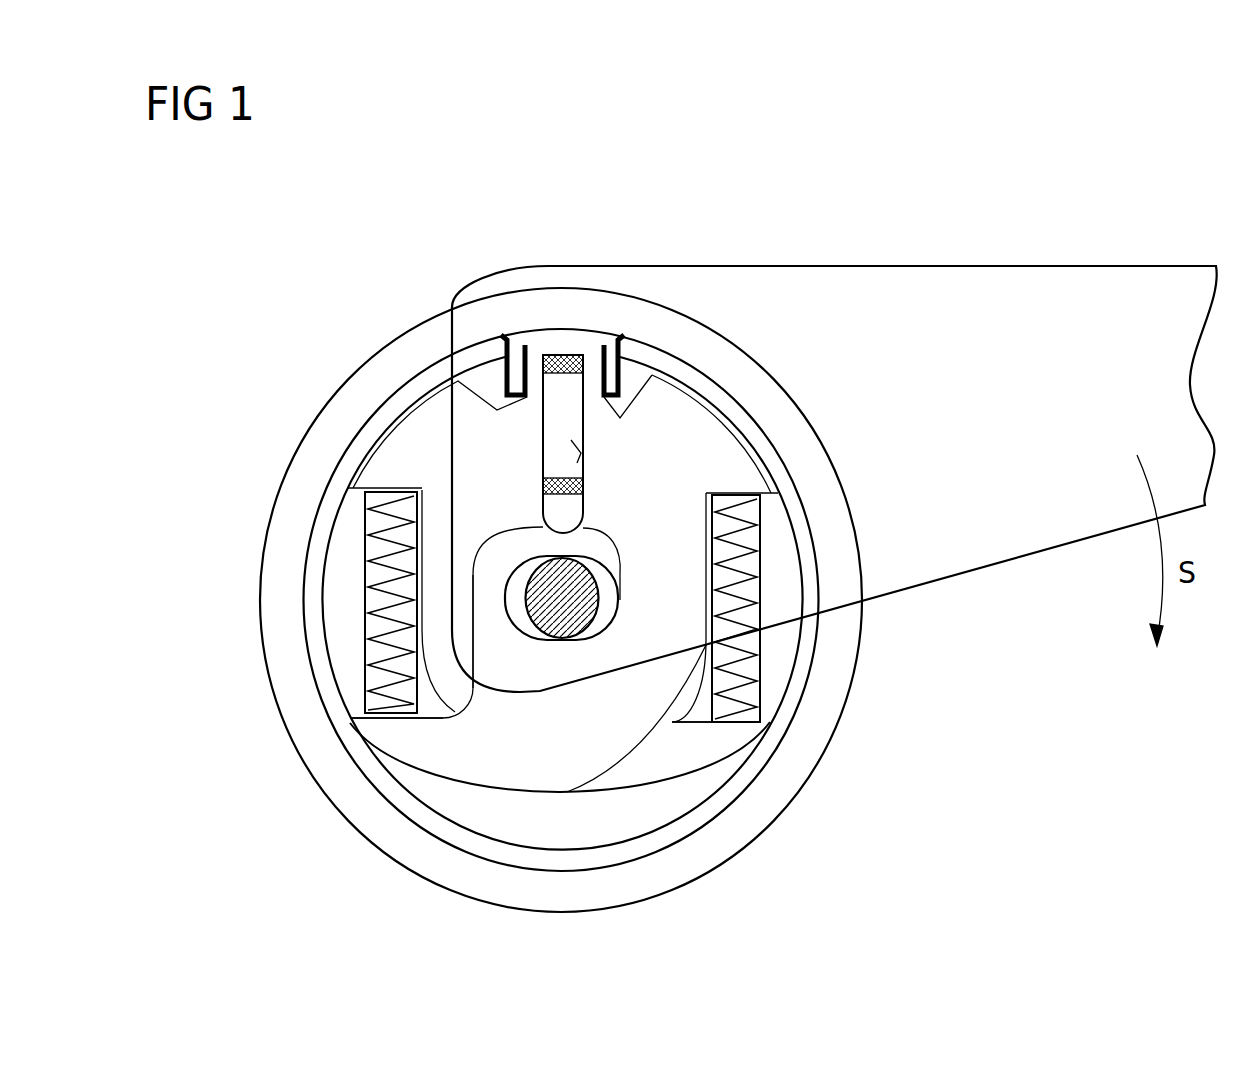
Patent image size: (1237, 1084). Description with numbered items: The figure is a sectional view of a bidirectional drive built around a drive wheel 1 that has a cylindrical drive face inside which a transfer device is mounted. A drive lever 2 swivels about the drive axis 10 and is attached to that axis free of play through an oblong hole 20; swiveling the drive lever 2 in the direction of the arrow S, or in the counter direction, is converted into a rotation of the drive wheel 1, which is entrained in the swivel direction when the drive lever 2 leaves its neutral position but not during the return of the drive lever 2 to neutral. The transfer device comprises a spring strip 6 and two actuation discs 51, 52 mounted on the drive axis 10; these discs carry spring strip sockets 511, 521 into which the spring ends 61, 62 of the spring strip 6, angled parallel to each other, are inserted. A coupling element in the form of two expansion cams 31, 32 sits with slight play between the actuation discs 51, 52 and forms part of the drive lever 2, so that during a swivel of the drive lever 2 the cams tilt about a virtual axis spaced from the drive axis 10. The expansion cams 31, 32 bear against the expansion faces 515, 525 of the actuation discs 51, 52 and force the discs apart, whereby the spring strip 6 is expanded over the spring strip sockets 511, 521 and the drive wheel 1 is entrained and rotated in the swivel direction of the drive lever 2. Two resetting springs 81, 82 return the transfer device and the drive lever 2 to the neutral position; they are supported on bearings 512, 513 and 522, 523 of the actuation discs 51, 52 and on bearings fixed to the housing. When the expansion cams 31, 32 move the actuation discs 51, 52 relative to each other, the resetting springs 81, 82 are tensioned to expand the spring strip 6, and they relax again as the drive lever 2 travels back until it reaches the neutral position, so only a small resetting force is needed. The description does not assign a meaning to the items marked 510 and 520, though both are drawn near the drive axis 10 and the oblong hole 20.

The drive wheel 1 is at (810, 738).
The drive lever 2 is at (1034, 327).
The spring strip 6 is at (318, 670).
The drive axis 10 is at (587, 555).
The oblong hole 20 is at (615, 578).
The expansion cam 31 is at (569, 333).
The expansion cam 32 is at (541, 485).
The actuation disc 51 is at (476, 578).
The actuation disc 52 is at (742, 592).
The spring end 61 is at (507, 358).
The spring end 62 is at (625, 358).
The resetting spring 81 is at (367, 583).
The resetting spring 82 is at (752, 567).
The first body lower portion 510 is at (545, 642).
The spring strip socket 511 is at (495, 407).
The bearing 512 is at (397, 488).
The bearing 513 is at (727, 723).
The expansion face 515 is at (549, 417).
The second body lower portion 520 is at (573, 642).
The spring strip socket 521 is at (612, 378).
The bearing 522 is at (727, 490).
The bearing 523 is at (387, 720).
The expansion face 525 is at (571, 440).